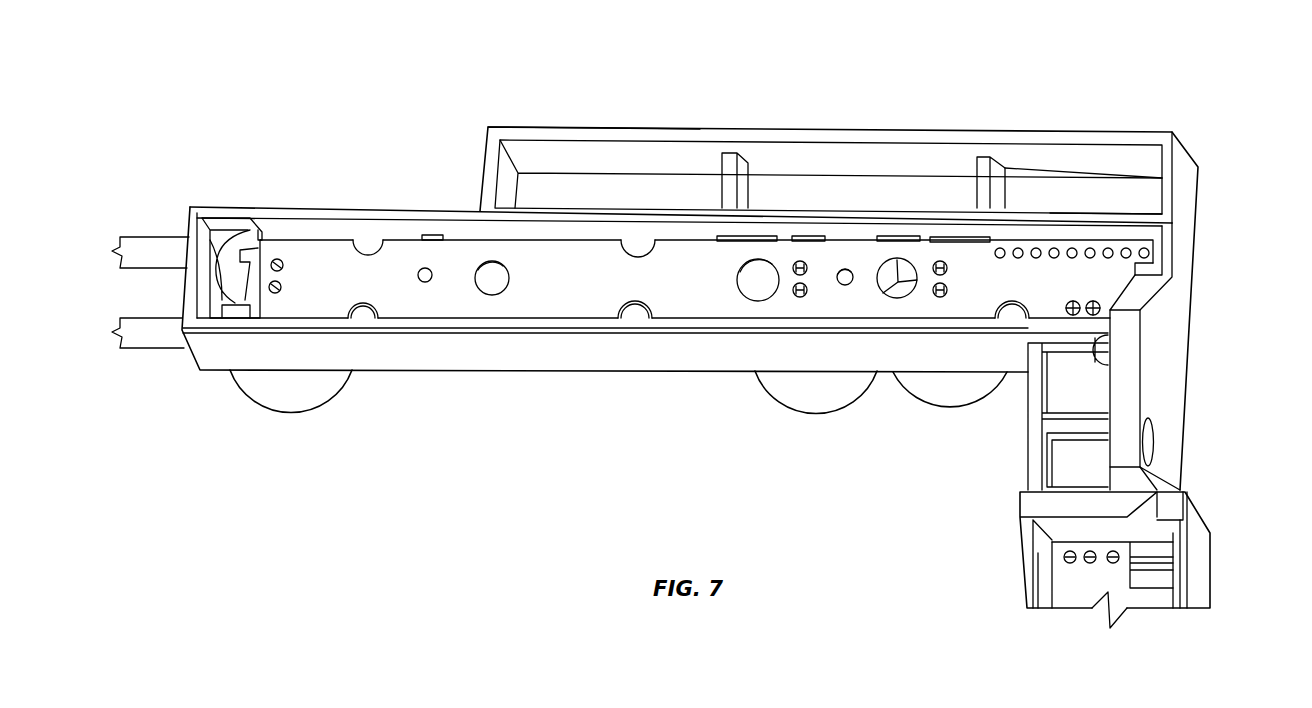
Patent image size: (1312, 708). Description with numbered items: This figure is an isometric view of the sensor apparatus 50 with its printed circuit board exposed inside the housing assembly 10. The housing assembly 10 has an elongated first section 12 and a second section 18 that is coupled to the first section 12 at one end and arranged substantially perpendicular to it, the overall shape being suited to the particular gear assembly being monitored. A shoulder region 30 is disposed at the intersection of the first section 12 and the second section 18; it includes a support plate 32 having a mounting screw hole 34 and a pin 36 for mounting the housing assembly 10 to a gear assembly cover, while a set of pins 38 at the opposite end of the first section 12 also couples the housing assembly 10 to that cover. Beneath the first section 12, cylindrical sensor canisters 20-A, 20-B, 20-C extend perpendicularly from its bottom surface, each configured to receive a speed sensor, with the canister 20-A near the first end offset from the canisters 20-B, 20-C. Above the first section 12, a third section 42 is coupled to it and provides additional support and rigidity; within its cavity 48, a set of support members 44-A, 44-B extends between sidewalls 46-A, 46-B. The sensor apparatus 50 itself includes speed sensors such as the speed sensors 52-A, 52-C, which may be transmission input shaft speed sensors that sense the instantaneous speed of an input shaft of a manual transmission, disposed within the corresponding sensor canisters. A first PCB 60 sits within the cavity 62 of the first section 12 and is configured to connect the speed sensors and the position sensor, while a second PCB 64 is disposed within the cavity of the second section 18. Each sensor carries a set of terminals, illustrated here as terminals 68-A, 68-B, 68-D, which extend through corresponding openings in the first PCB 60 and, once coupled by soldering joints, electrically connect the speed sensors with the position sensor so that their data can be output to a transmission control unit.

The housing assembly 10 is at (167, 181).
The first section 12 is at (596, 405).
The second section 18 is at (1231, 557).
The sensor canister 20-A is at (297, 410).
The sensor canister 20-B is at (813, 407).
The sensor canister 20-C is at (940, 400).
The shoulder region 30 is at (1205, 407).
The support plate 32 is at (1167, 365).
The mounting screw hole 34 is at (1159, 449).
The pin 36 is at (1107, 350).
The set of pins 38 is at (97, 278).
The third section 42 is at (758, 50).
The support member 44-A is at (727, 156).
The support member 44-B is at (987, 155).
The sidewall 46-A is at (567, 130).
The sidewall 46-B is at (1127, 217).
The cavity 48 is at (1100, 153).
The sensor apparatus 50 is at (402, 85).
The speed sensor 52-A is at (248, 253).
The speed sensor 52-C is at (905, 272).
The first PCB 60 is at (403, 267).
The cavity 62 is at (641, 229).
The second PCB 64 is at (1080, 593).
The terminal 68-A is at (279, 249).
The terminal 68-B is at (805, 249).
The terminal 68-D is at (1097, 285).